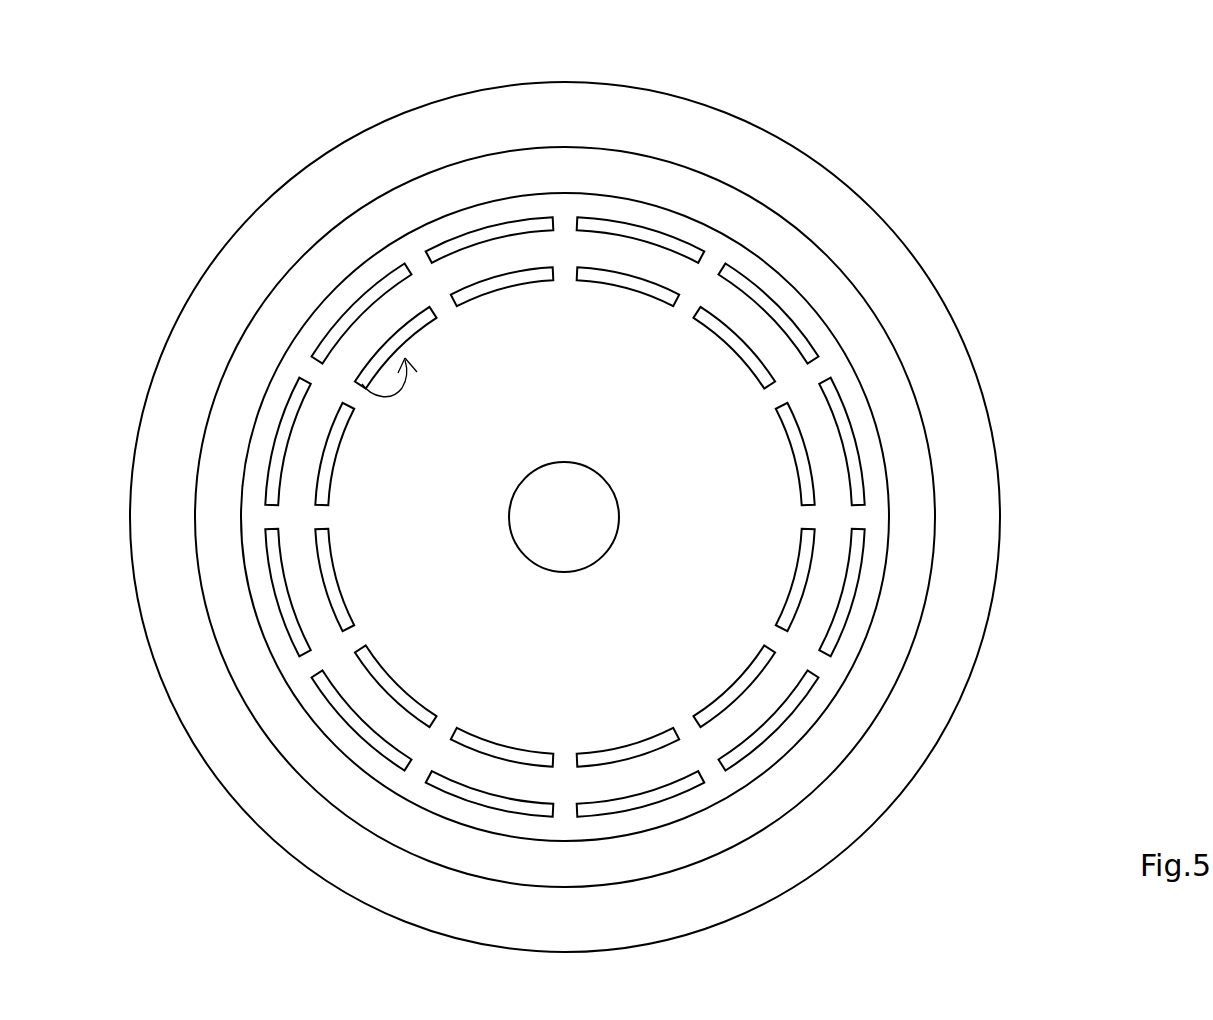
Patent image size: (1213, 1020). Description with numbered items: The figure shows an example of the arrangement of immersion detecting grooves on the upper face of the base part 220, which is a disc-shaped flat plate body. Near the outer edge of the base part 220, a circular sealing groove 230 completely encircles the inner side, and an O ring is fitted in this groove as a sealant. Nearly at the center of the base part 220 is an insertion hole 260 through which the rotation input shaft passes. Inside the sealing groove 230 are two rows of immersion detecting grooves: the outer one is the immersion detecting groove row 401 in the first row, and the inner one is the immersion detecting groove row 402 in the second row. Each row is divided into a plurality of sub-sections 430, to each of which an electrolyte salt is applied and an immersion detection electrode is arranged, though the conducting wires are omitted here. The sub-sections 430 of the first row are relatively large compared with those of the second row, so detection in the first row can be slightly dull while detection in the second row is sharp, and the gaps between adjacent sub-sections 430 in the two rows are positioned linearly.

The base part 220 is at (723, 138).
The sealing groove 230 is at (567, 150).
The insertion hole 260 is at (590, 470).
The immersion detecting groove row in the first row 401 is at (380, 268).
The immersion detecting groove row in the second row 402 is at (362, 382).
The sub-section 430 is at (460, 232).